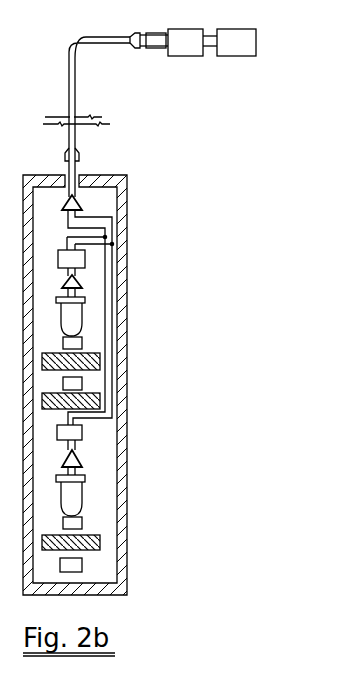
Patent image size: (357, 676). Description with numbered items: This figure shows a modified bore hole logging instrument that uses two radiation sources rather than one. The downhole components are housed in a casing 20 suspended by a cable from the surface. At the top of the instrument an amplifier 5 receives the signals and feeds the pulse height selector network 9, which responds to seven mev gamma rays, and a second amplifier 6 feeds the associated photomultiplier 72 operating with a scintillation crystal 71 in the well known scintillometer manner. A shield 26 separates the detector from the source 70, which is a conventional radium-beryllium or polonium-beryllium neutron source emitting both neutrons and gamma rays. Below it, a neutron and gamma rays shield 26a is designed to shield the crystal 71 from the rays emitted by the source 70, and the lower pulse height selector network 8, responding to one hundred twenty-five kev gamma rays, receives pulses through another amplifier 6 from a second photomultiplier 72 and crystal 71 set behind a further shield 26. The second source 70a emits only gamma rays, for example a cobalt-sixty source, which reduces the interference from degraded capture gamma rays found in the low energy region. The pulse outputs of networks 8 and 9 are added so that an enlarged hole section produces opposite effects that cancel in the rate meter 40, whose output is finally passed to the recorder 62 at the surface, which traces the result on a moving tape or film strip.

The casing / housing 20 is at (98, 383).
The rate meter 40 is at (156, 62).
The recorder 62 is at (245, 57).
The amplifier 5 is at (114, 205).
The pulse height selector network 9 is at (112, 260).
The amplifier 6 is at (111, 376).
The photomultiplier 72 is at (117, 407).
The crystal 71 is at (118, 428).
The shield 26 is at (107, 453).
The source 70 is at (118, 385).
The neutron and gamma rays shield 26a is at (111, 404).
The pulse height selector network 8 is at (112, 430).
The source 70a is at (119, 571).